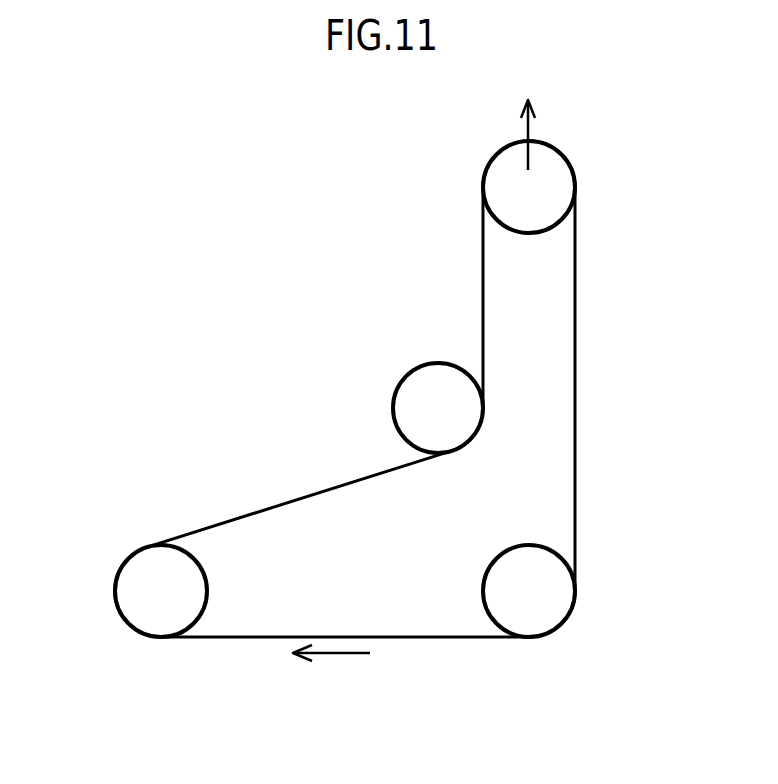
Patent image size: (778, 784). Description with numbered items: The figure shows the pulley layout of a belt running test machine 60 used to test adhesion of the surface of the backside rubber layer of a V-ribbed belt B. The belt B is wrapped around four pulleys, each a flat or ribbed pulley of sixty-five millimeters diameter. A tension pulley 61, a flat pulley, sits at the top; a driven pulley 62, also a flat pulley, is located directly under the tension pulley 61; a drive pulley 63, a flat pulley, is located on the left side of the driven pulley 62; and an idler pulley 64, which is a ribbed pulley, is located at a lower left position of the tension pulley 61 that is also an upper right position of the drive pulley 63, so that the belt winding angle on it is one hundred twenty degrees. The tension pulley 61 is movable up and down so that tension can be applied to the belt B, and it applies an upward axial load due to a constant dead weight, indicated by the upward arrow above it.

The belt running test machine 60 is at (394, 368).
The tension pulley 61 is at (555, 183).
The driven pulley 62 is at (548, 605).
The drive pulley 63 is at (135, 596).
The idler pulley 64 is at (415, 394).
The V-ribbed belt B is at (575, 351).